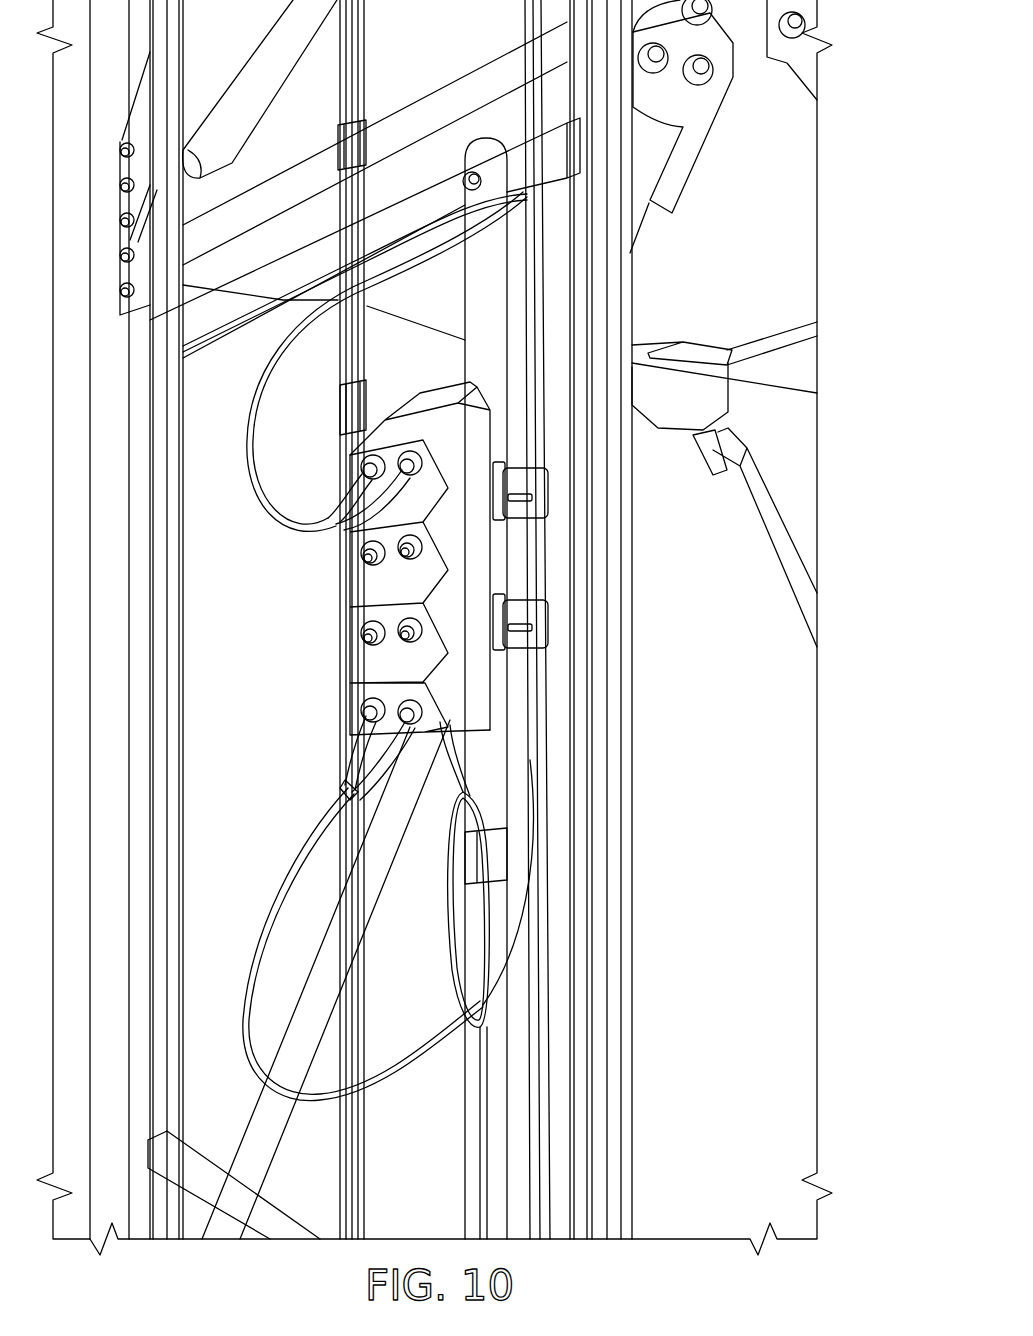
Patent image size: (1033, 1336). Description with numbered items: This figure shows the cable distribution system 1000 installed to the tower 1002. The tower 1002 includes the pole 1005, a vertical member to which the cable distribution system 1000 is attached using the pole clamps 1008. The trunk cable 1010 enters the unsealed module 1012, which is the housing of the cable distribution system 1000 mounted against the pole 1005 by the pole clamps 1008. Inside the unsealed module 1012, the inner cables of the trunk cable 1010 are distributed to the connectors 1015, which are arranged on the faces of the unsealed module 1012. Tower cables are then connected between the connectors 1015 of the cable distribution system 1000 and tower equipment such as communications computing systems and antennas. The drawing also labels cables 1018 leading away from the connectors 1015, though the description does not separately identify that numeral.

The cable distribution system 1000 is at (313, 682).
The tower 1002 is at (695, 112).
The pole 1005 is at (492, 293).
The pole clamps 1008 is at (556, 503).
The trunk cable 1010 is at (460, 983).
The unsealed module 1012 is at (470, 567).
The connectors 1015 is at (365, 552).
The cable 1018 is at (398, 477).